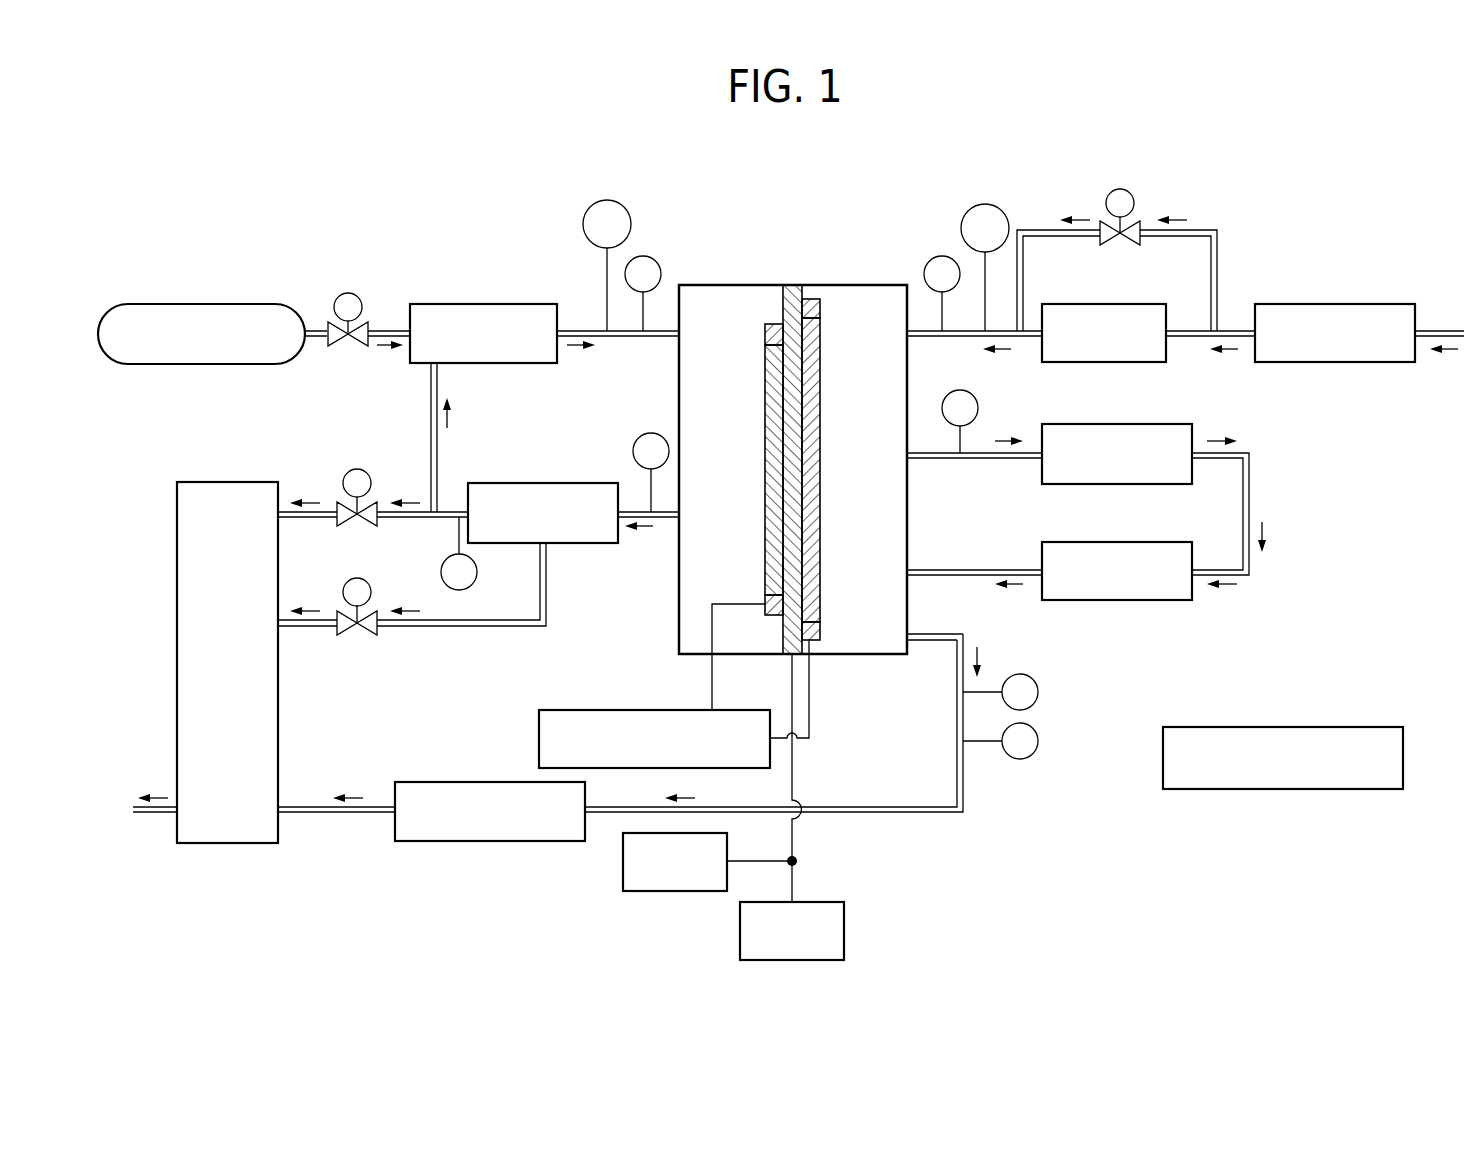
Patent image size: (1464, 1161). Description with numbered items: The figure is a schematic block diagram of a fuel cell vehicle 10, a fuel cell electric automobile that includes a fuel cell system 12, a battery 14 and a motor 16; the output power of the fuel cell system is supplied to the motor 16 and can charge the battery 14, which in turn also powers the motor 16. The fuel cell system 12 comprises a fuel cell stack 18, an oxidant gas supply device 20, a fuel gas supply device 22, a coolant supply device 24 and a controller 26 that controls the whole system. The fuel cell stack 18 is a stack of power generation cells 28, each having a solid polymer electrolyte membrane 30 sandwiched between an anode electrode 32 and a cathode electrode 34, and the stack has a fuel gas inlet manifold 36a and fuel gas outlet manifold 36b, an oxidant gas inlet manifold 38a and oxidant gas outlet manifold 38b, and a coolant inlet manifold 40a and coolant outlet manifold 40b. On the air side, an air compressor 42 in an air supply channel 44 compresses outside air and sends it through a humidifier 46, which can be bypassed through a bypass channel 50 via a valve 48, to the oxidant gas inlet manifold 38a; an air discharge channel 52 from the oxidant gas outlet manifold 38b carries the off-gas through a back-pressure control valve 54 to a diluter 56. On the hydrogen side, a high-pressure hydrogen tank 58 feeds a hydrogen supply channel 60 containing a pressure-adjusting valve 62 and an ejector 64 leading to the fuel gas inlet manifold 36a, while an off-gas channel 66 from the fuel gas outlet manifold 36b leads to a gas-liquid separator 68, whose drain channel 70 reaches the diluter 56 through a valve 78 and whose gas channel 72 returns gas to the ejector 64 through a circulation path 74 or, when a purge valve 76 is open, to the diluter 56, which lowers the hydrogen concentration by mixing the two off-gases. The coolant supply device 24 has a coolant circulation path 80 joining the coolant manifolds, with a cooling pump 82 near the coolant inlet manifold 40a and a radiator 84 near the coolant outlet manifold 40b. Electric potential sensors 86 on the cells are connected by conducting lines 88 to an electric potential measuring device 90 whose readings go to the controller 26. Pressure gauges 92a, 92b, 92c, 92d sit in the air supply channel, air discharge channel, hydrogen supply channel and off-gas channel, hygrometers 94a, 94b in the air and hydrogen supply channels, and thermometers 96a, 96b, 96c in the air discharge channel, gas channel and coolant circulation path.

The fuel cell vehicle 10 is at (285, 222).
The fuel cell system 12 is at (835, 272).
The battery 14 is at (647, 891).
The motor 16 is at (844, 918).
The fuel cell stack 18 is at (770, 283).
The oxidant gas supply device 20 is at (1218, 220).
The fuel gas supply device 22 is at (392, 245).
The coolant supply device 24 is at (1280, 465).
The controller 26 is at (1358, 727).
The power generation cell 28 is at (792, 283).
The solid polymer electrolyte membrane 30 is at (793, 418).
The anode electrode 32 is at (768, 374).
The cathode electrode 34 is at (815, 388).
The fuel gas inlet manifold 36a is at (676, 336).
The fuel gas outlet manifold 36b is at (679, 525).
The oxidant gas inlet manifold 38a is at (910, 338).
The oxidant gas outlet manifold 38b is at (909, 642).
The coolant inlet manifold 40a is at (910, 577).
The coolant outlet manifold 40b is at (910, 459).
The air compressor 42 is at (1354, 304).
The air supply channel 44 is at (1200, 338).
The humidifier 46 is at (1141, 304).
The valve 48 is at (1123, 189).
The bypass channel 50 is at (1052, 230).
The air discharge channel 52 is at (919, 814).
The back-pressure control valve 54 is at (417, 782).
The diluter 56 is at (261, 482).
The high-pressure hydrogen tank 58 is at (150, 304).
The hydrogen supply channel 60 is at (388, 325).
The valve 62 is at (346, 348).
The ejector 64 is at (537, 363).
The off-gas channel 66 is at (679, 512).
The gas-liquid separator 68 is at (566, 483).
The drain channel 70 is at (509, 626).
The gas channel 72 is at (447, 517).
The circulation path 74 is at (437, 443).
The purge valve 76 is at (357, 469).
The valve 78 is at (357, 579).
The coolant circulation path 80 is at (1249, 500).
The cooling pump 82 is at (1159, 542).
The radiator 84 is at (1159, 424).
The electric potential sensor 86 is at (765, 334).
The conducting line 88 is at (712, 672).
The electric potential measuring device 90 is at (539, 730).
The pressure gauge 92a is at (929, 262).
The pressure gauge 92b is at (1038, 683).
The pressure gauge 92c is at (656, 262).
The pressure gauge 92d is at (650, 433).
The hygrometer 94a is at (966, 214).
The hygrometer 94b is at (618, 206).
The thermometer 96a is at (1038, 733).
The thermometer 96b is at (477, 575).
The thermometer 96c is at (977, 401).